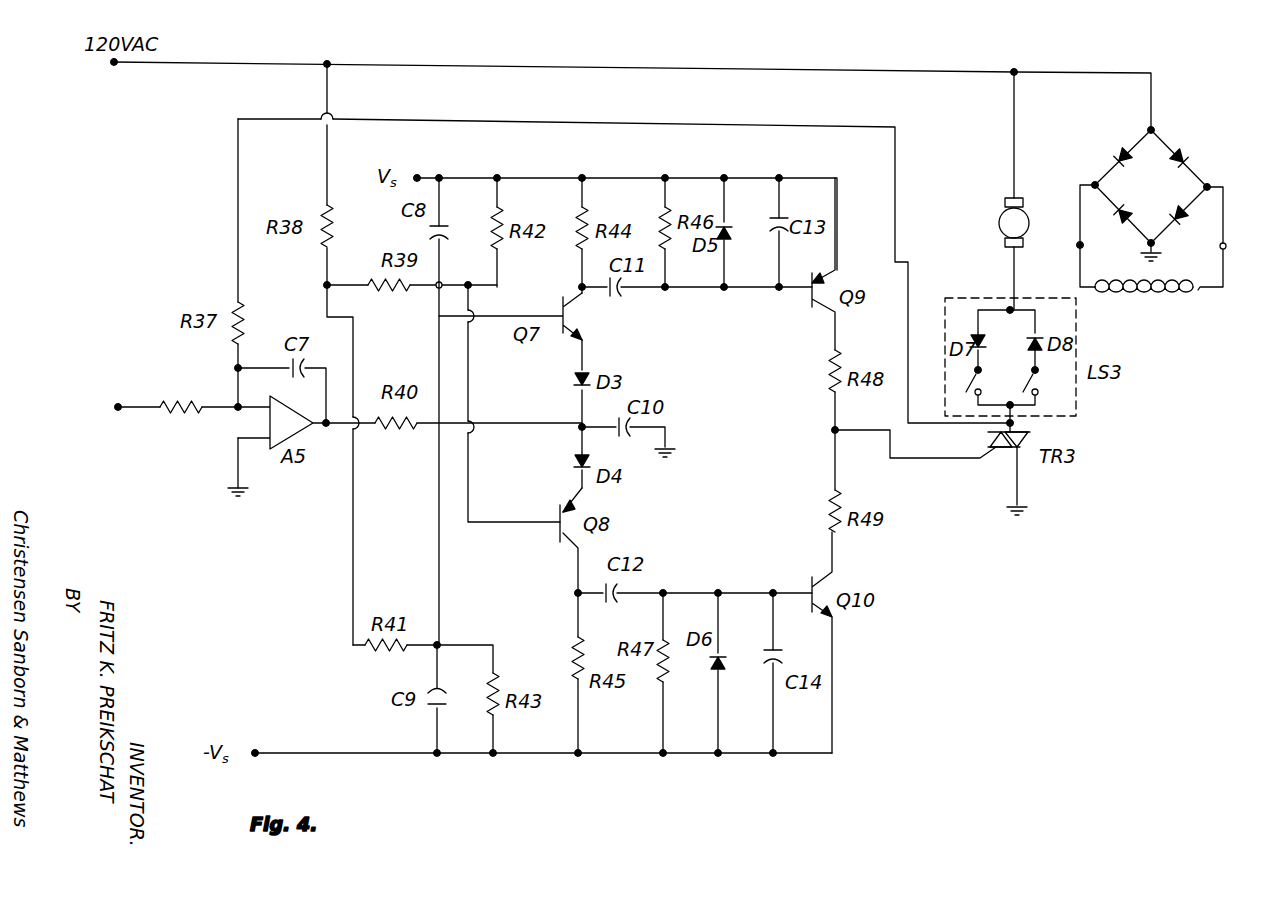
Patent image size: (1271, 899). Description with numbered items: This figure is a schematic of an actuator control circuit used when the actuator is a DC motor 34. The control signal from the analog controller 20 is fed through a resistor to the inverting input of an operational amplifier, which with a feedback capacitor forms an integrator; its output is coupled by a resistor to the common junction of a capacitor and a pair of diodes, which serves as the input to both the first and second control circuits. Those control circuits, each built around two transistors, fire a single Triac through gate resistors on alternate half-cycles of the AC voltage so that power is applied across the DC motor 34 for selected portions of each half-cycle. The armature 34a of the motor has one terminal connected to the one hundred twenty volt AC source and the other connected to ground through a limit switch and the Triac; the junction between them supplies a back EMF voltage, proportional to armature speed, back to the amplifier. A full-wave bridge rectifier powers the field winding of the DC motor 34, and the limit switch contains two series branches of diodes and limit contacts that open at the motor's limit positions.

The DC motor 34 is at (1084, 198).
The armature 34a is at (1029, 209).
The analog controller 20 is at (119, 411).